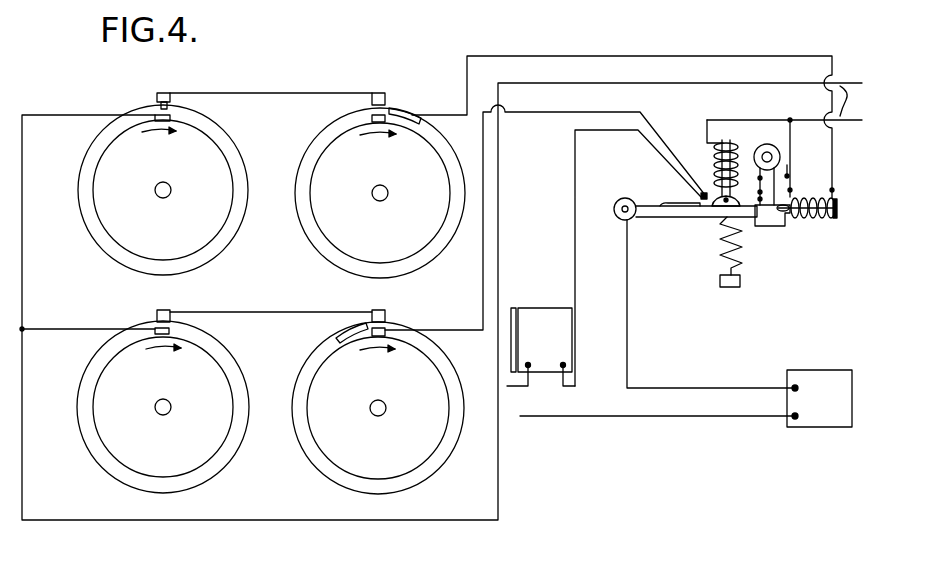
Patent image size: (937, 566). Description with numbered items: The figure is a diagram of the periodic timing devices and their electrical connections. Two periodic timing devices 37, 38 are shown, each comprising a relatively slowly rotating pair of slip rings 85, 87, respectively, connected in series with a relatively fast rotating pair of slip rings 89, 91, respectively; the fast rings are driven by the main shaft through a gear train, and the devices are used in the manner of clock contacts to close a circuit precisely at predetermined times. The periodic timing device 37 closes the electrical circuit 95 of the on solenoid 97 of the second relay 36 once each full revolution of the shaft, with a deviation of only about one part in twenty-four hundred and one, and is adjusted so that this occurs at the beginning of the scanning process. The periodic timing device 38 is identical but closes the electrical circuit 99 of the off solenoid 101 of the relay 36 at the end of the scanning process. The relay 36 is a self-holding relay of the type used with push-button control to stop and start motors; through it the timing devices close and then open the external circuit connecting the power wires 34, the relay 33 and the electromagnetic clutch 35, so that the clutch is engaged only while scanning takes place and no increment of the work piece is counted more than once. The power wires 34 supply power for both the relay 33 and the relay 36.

The relay 33 is at (812, 381).
The power wires 34 is at (856, 100).
The electromagnetic clutch 35 is at (539, 330).
The second relay 36 is at (788, 232).
The periodic timing device 37 is at (139, 401).
The periodic timing device 38 is at (139, 188).
The slip rings 85 is at (97, 461).
The slip rings 87 is at (100, 238).
The slip rings 89 is at (318, 470).
The slip rings 91 is at (312, 247).
The electrical circuit 95 is at (640, 113).
The on solenoid 97 is at (728, 142).
The electrical circuit 99 is at (467, 73).
The off solenoid 101 is at (833, 218).